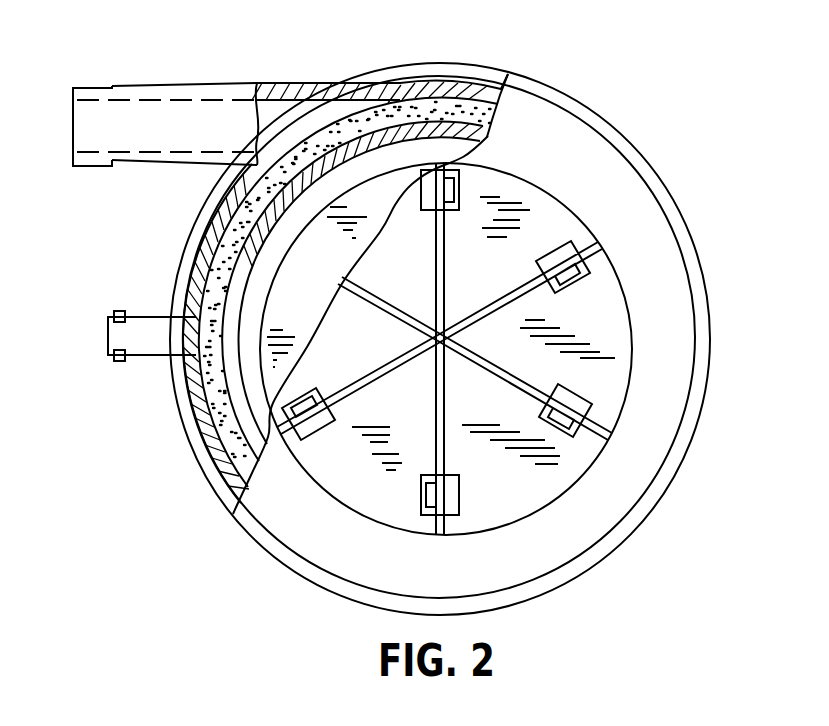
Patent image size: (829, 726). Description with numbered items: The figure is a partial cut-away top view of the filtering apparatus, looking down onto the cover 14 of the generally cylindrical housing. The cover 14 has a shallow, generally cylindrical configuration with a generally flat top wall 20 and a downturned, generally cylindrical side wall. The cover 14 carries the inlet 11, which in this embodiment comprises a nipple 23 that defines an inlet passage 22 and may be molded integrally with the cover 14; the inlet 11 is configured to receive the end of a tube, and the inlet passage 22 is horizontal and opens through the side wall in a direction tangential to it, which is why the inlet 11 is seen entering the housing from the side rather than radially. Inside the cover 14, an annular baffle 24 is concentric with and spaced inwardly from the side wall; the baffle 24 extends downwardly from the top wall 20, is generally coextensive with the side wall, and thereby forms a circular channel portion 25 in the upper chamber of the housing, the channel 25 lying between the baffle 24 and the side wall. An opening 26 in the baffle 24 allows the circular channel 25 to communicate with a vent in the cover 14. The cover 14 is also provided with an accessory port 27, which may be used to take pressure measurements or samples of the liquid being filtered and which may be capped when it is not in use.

The inlet 11 is at (135, 87).
The cover 14 is at (634, 168).
The top wall 20 is at (583, 457).
The inlet passage 22 is at (283, 100).
The nipple 23 is at (112, 166).
The annular baffle 24 is at (389, 130).
The circular channel portion 25 is at (483, 103).
The opening 26 is at (230, 383).
The accessory port 27 is at (150, 315).